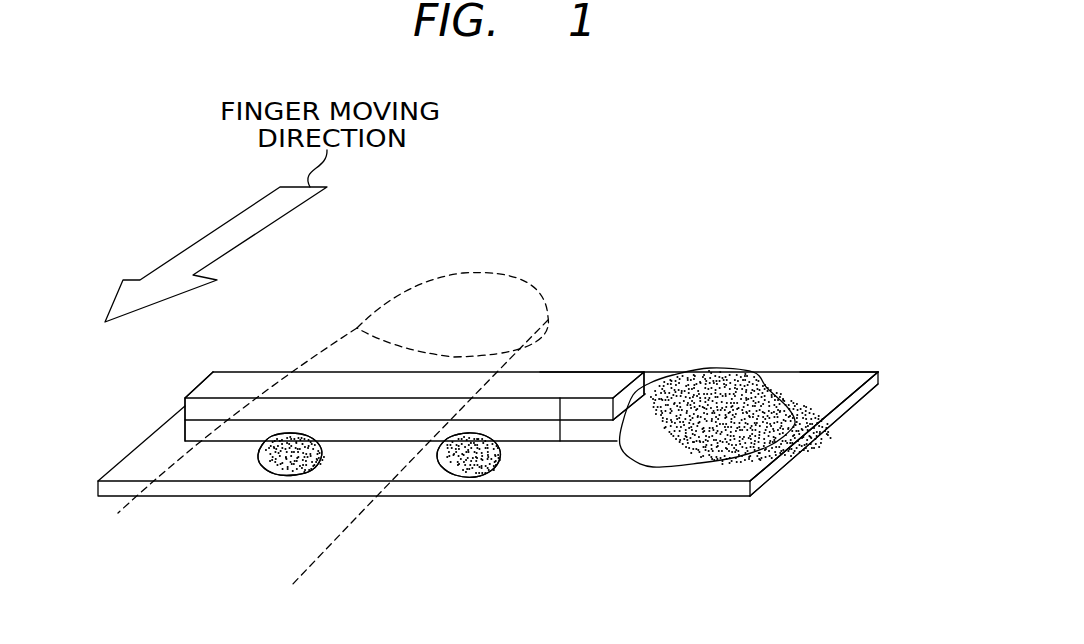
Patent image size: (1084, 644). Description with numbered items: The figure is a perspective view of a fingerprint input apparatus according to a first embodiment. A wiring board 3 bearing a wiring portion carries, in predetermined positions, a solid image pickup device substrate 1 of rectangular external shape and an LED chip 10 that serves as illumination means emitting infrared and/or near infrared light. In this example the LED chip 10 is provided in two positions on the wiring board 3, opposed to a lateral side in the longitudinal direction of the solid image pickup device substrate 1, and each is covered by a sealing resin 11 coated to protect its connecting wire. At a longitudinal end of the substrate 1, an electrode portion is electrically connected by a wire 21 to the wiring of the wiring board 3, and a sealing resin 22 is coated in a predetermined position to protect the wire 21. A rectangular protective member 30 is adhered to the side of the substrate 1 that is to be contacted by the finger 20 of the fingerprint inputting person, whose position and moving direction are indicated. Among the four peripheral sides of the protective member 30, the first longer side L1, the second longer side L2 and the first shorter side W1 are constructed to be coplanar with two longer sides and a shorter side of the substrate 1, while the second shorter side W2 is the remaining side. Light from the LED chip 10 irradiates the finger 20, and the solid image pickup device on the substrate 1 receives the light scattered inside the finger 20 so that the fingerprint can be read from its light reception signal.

The solid image pickup device substrate 1 is at (190, 447).
The wiring board 3 is at (745, 470).
The LED chip 10 is at (277, 473).
The sealing resin 11 is at (313, 470).
The finger 20 is at (530, 287).
The wire 21 is at (775, 445).
The sealing resin 22 is at (760, 370).
The protective member 30 is at (318, 382).
The first shorter side W1 is at (200, 376).
The second shorter side W2 is at (653, 393).
The first longer side L1 is at (573, 399).
The second longer side L2 is at (567, 372).